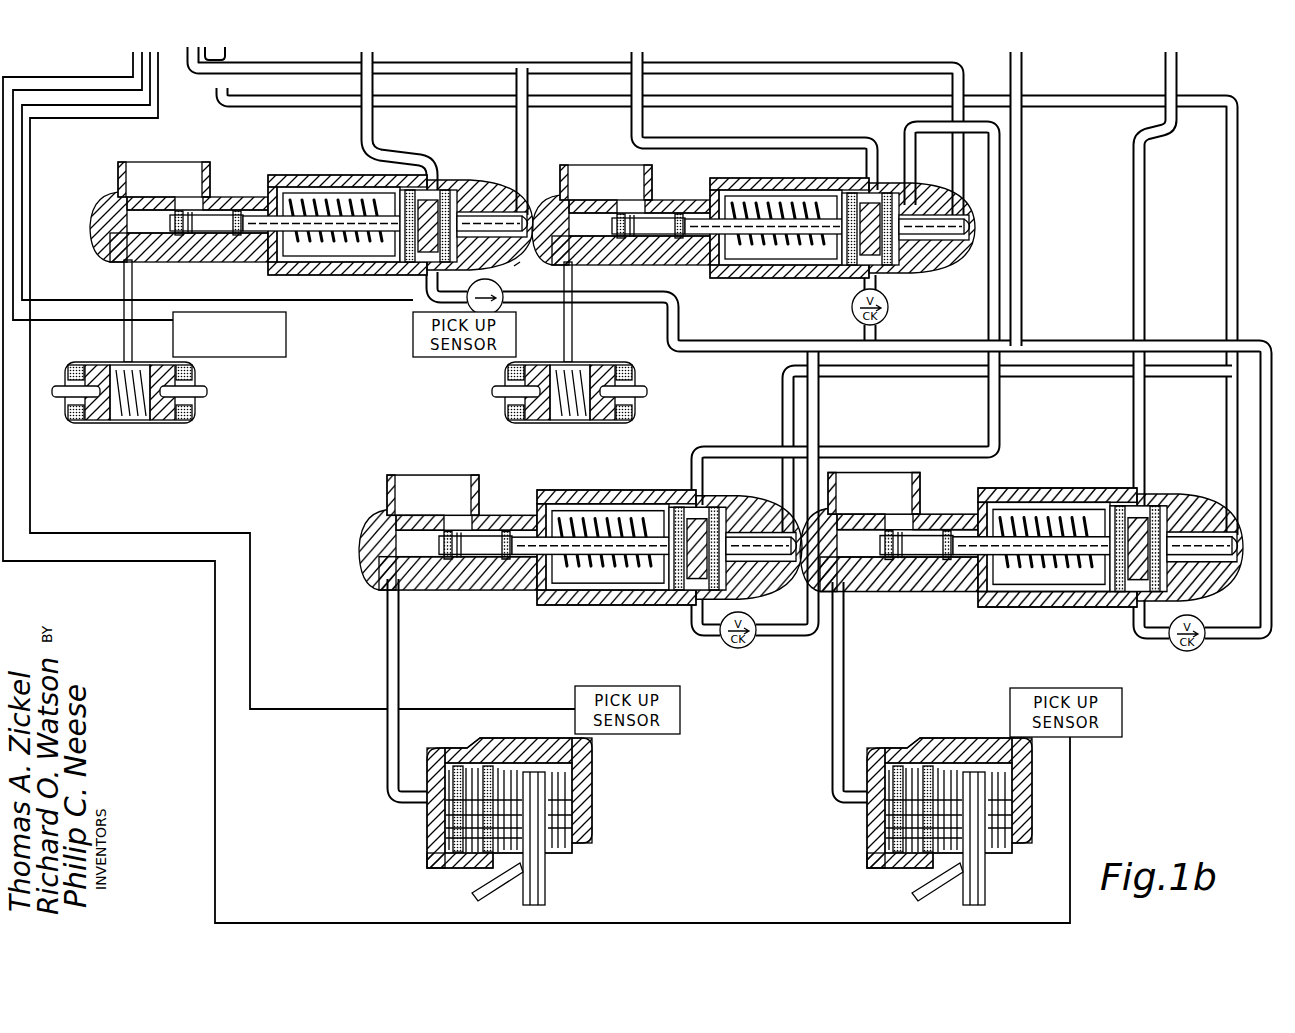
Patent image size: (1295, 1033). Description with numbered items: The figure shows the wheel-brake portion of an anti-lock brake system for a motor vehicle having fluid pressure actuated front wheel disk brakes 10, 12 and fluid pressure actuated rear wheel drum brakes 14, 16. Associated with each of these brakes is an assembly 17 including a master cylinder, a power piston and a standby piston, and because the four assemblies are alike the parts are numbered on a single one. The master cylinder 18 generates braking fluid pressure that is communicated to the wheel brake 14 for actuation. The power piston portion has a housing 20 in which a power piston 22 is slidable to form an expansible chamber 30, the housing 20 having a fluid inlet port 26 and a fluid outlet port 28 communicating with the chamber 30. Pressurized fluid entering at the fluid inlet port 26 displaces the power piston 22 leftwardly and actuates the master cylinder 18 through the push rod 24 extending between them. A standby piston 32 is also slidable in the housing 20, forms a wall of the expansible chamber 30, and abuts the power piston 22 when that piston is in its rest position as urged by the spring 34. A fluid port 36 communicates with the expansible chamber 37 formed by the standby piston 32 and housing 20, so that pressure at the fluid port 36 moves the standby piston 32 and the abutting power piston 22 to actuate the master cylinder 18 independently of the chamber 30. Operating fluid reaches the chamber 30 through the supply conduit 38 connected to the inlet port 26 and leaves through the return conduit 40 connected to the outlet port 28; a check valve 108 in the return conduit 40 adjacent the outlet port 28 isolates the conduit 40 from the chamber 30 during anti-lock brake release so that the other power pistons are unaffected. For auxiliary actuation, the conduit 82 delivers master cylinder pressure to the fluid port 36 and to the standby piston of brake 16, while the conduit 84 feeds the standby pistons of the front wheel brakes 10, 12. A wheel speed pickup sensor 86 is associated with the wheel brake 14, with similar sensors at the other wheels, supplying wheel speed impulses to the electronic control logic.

The front wheel disk brake 10 is at (607, 793).
The front wheel disk brake 12 is at (964, 724).
The rear wheel drum brake 14 is at (149, 436).
The rear wheel drum brake 16 is at (503, 402).
The assembly 17 is at (666, 363).
The master cylinder 18 is at (215, 218).
The housing 20 is at (322, 177).
The power piston 22 is at (367, 204).
The push rod 24 is at (322, 245).
The fluid inlet port 26 is at (440, 186).
The fluid outlet port 28 is at (428, 264).
The expansible chamber 30 is at (408, 264).
The standby piston 32 is at (452, 193).
The spring 34 is at (297, 200).
The fluid port 36 is at (527, 212).
The expansible chamber 37 is at (535, 265).
The supply conduit 38 is at (373, 121).
The return conduit 40 is at (690, 310).
The conduit 82 is at (196, 70).
The conduit 84 is at (230, 104).
The wheel speed pickup sensor 86 is at (288, 348).
The check valve 108 is at (500, 283).